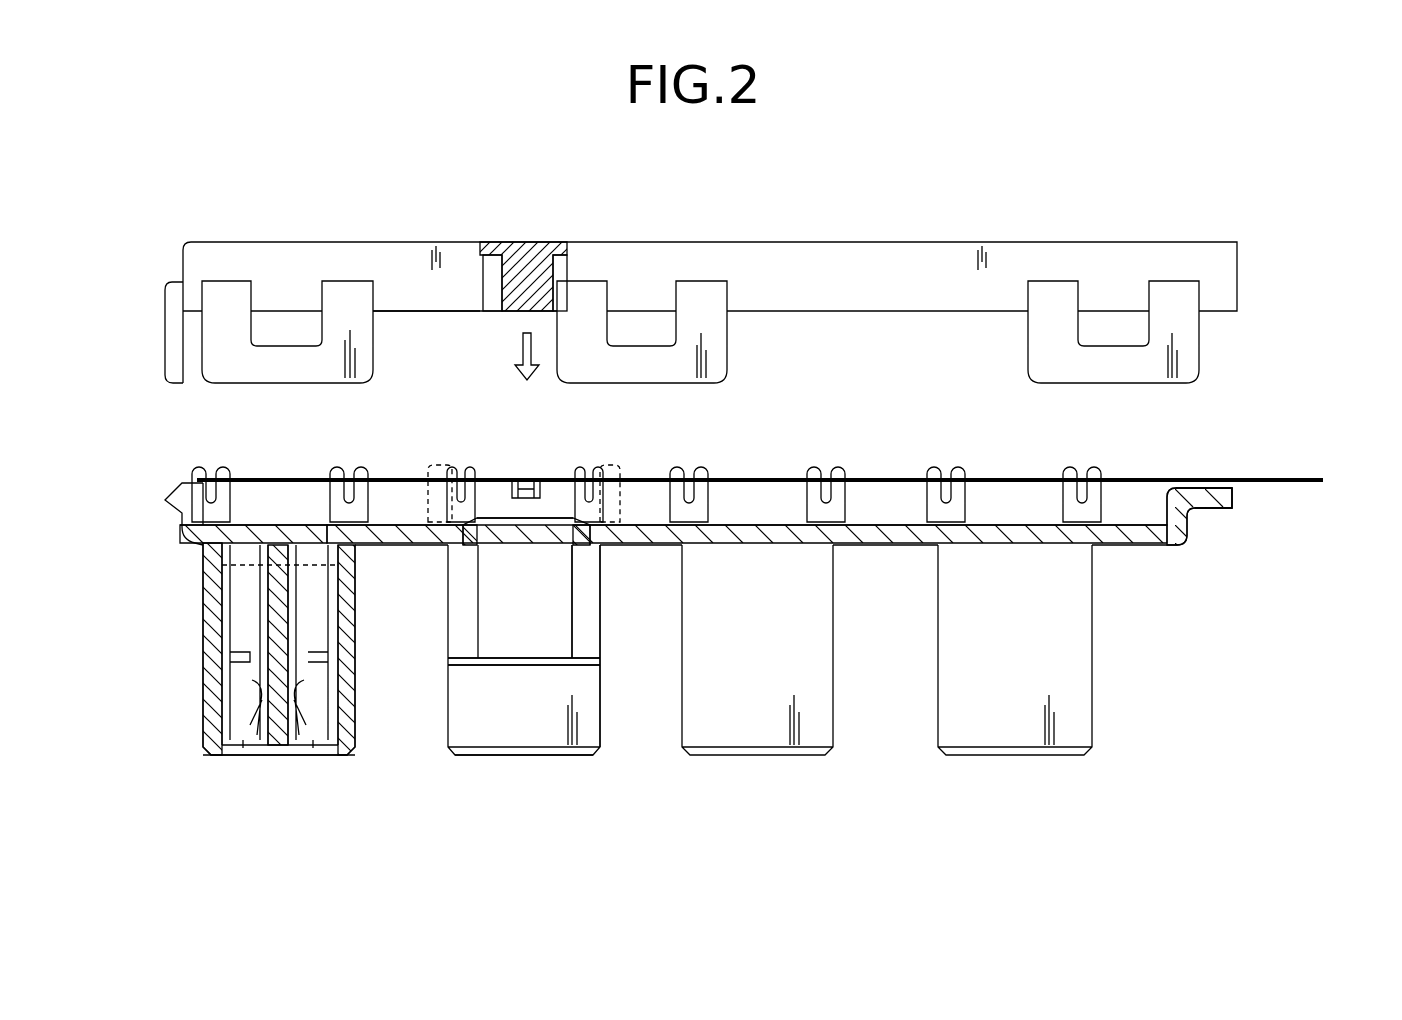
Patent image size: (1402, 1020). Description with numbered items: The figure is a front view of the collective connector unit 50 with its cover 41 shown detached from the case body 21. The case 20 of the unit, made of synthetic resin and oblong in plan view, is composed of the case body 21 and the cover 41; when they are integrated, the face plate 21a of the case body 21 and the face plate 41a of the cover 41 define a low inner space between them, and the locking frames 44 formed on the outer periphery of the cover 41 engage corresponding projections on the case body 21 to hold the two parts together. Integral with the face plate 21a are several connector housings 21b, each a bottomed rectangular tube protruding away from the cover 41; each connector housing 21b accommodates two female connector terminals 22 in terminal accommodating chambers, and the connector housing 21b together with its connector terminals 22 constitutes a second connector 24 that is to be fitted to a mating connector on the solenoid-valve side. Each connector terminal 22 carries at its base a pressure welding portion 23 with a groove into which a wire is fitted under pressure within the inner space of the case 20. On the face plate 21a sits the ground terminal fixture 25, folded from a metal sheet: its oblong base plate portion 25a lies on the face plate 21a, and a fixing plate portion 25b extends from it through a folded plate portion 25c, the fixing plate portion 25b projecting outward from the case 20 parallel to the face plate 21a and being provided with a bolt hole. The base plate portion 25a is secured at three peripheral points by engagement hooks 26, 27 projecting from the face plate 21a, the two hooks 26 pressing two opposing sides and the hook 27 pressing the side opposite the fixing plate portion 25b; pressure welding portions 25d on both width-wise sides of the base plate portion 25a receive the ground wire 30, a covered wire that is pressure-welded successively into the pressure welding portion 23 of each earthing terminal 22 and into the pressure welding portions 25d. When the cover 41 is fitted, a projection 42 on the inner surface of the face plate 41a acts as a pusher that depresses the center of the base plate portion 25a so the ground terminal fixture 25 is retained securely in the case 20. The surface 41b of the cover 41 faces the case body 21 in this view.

The case 20 is at (1242, 495).
The case body 21 is at (754, 564).
The face plate 21a is at (884, 548).
The connector housing 21b is at (203, 634).
The female connector terminal 22 is at (262, 748).
The pressure welding portion 23 is at (232, 466).
The second connector 24 is at (270, 766).
The ground terminal fixture 25 is at (466, 601).
The base plate portion 25a is at (478, 550).
The fixing plate portion 25b is at (532, 668).
The folded plate portion 25c is at (574, 600).
The pressure welding portion for earthing 25d is at (440, 465).
The engagement hook 26 is at (468, 476).
The engagement hook 27 is at (546, 482).
The ground wire 30 is at (880, 478).
The cover 41 is at (1262, 280).
The face plate of the cover 41a is at (518, 252).
The housing bottom surface 41b is at (413, 300).
The projection (pusher) 42 is at (525, 313).
The locking frame 44 is at (212, 372).
The collective connector unit 50 is at (747, 285).